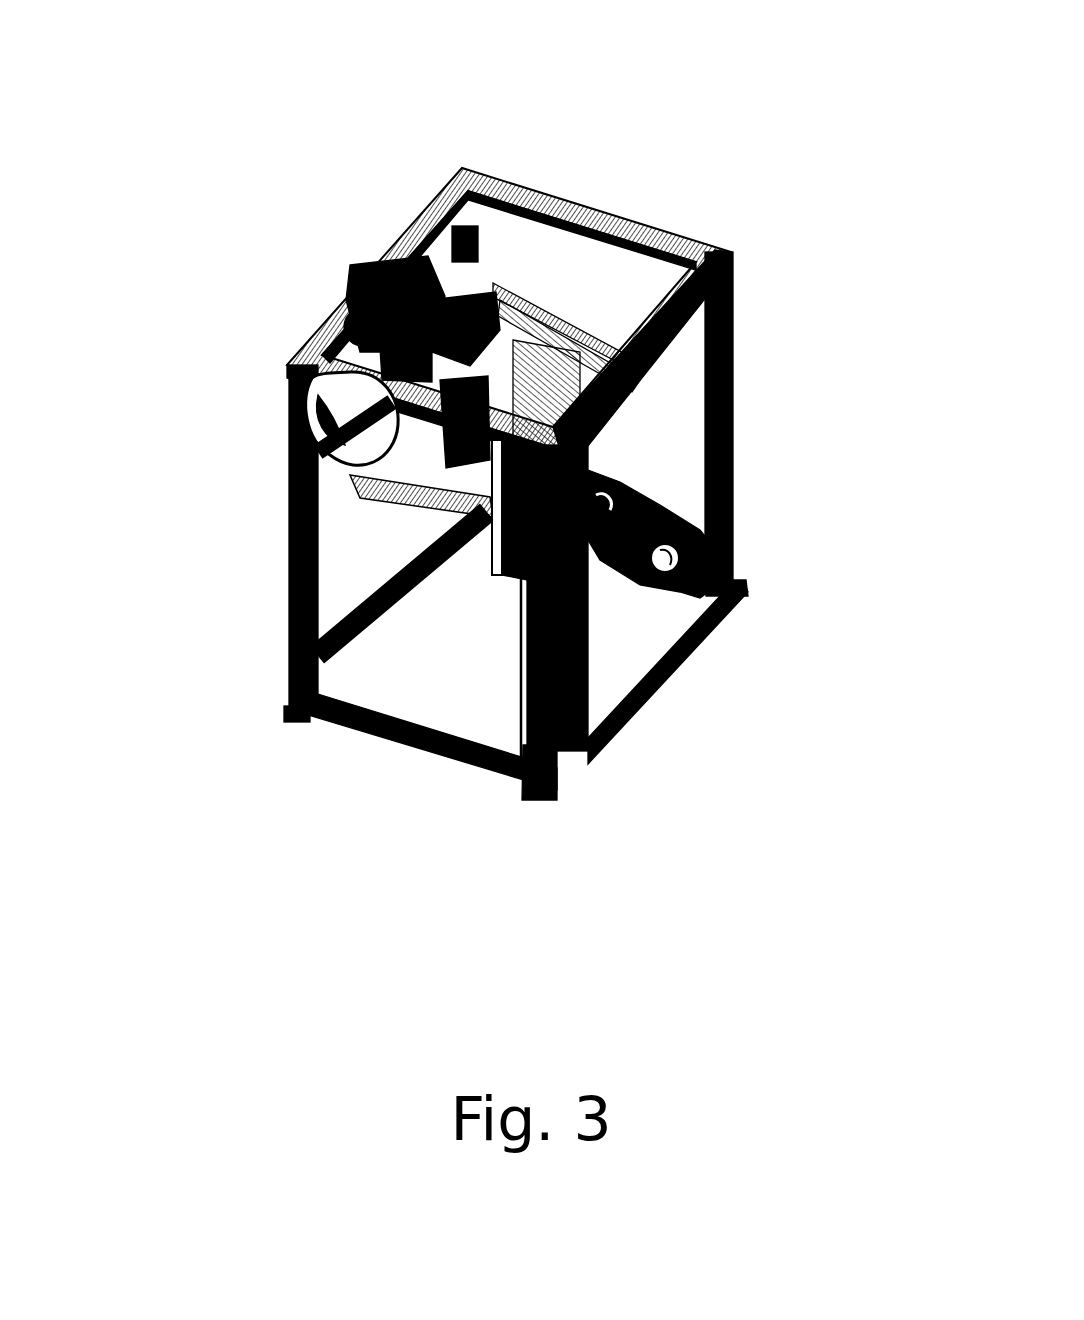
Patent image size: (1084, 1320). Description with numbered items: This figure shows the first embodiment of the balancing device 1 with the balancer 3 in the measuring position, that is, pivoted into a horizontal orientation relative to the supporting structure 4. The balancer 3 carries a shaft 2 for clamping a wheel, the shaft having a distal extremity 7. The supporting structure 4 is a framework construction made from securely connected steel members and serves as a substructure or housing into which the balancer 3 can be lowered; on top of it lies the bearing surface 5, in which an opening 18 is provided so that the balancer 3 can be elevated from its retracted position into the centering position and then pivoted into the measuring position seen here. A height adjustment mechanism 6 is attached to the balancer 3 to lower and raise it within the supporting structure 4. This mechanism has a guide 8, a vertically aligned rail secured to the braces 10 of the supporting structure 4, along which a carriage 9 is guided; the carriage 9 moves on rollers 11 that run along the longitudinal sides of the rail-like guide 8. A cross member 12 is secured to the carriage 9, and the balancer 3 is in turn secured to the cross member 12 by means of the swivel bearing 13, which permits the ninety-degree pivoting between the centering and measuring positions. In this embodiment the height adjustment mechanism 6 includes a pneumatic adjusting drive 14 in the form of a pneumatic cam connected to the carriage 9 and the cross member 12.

The balancing device 1 is at (744, 193).
The shaft 2 is at (290, 430).
The balancer 3 is at (373, 263).
The supporting structure 4 is at (733, 364).
The bearing surface 5 is at (580, 268).
The height adjustment mechanism 6 is at (497, 595).
The distal extremity 7 is at (292, 498).
The guide 8 is at (522, 648).
The carriage 9 is at (490, 540).
The braces 10 is at (588, 628).
The rollers 11 is at (590, 630).
The cross member 12 is at (460, 480).
The swivel bearing 13 is at (420, 455).
The pneumatic adjusting drive 14 is at (687, 600).
The opening 18 is at (640, 374).